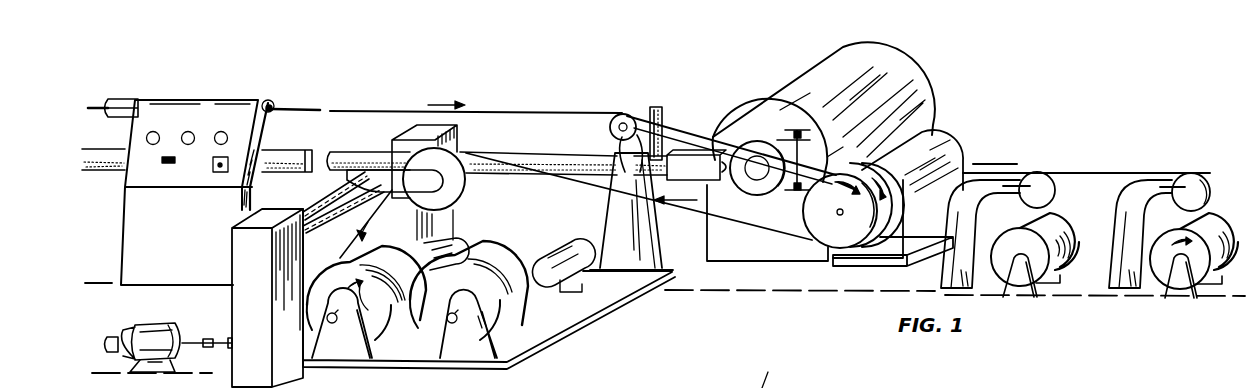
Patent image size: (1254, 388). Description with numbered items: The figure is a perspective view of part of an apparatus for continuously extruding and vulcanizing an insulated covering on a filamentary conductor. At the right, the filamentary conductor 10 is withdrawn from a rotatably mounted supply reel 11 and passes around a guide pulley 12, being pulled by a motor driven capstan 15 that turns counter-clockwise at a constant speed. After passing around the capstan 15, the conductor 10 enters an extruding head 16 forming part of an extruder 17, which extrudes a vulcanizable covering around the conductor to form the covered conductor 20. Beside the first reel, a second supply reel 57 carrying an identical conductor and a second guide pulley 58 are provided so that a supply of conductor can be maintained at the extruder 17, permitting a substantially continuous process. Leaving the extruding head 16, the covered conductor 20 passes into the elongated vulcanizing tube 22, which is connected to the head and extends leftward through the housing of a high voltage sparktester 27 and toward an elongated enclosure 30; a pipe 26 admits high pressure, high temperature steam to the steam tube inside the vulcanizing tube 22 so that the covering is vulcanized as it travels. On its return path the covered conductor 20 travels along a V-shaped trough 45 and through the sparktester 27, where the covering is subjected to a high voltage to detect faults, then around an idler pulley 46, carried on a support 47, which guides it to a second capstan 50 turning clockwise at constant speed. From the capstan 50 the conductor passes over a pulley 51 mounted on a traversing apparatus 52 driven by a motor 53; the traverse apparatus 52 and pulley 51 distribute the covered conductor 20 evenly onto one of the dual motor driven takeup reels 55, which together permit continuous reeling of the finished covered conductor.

The filamentary conductor 10 is at (1120, 172).
The supply reel 11 is at (1192, 285).
The guide pulley 12 is at (1200, 178).
The capstan 15 is at (900, 200).
The extruding head 16 is at (750, 190).
The extruder 17 is at (925, 89).
The covered conductor 20 is at (97, 101).
The vulcanizing tube 22 is at (491, 176).
The pipe 26 is at (657, 104).
The sparktester 27 is at (244, 100).
The elongated enclosure 30 is at (761, 380).
The V-shaped trough 45 is at (131, 100).
The idler pulley 46 is at (623, 113).
The pulley support 47 is at (612, 224).
The capstan 50 is at (858, 240).
The pulley 51 is at (458, 195).
The traversing apparatus 52 is at (337, 229).
The motor 53 is at (158, 328).
The takeup reels 55 is at (411, 354).
The second supply reel 57 is at (1065, 223).
The second guide pulley 58 is at (1042, 180).